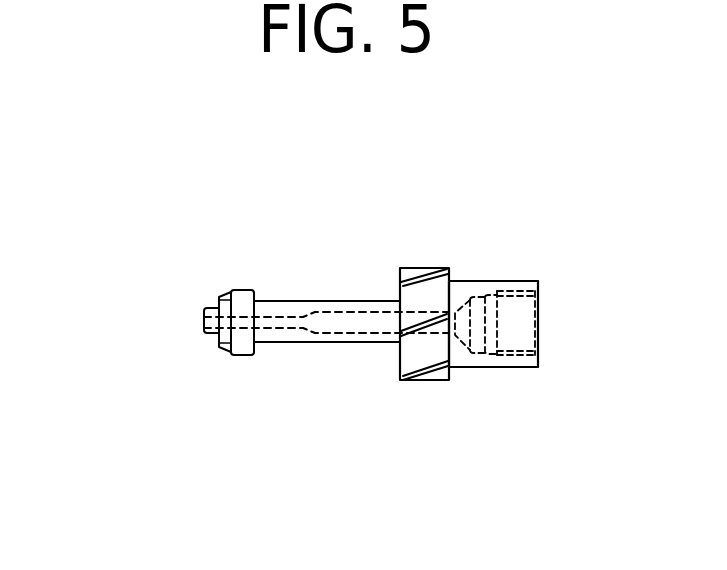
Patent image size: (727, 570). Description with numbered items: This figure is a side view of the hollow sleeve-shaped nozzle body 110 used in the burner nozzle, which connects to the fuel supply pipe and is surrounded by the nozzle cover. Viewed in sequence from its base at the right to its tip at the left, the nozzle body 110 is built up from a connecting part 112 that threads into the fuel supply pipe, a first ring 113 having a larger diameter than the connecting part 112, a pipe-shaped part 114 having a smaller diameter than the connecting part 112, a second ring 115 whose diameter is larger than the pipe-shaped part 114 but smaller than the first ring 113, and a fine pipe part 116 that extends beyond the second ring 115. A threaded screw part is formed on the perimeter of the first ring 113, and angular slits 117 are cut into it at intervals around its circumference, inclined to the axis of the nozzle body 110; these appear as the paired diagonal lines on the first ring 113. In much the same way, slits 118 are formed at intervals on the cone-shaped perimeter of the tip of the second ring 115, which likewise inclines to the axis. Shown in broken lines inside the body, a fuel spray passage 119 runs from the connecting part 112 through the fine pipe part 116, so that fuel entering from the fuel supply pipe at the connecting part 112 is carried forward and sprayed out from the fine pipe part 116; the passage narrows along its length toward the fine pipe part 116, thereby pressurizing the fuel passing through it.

The nozzle body 110 is at (277, 390).
The connecting part 112 is at (510, 280).
The first ring 113 is at (413, 267).
The pipe-shaped part 114 is at (331, 300).
The second ring 115 is at (238, 289).
The fine pipe part 116 is at (210, 336).
The angular slits 117 is at (437, 376).
The slits 118 is at (223, 298).
The fuel spray passage 119 is at (347, 340).